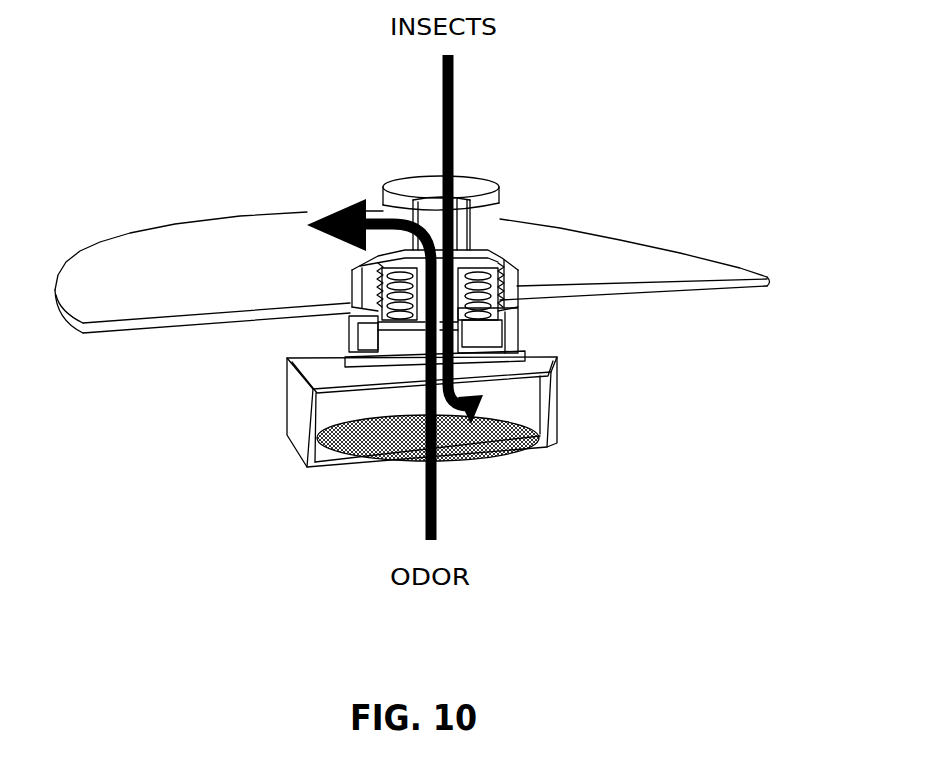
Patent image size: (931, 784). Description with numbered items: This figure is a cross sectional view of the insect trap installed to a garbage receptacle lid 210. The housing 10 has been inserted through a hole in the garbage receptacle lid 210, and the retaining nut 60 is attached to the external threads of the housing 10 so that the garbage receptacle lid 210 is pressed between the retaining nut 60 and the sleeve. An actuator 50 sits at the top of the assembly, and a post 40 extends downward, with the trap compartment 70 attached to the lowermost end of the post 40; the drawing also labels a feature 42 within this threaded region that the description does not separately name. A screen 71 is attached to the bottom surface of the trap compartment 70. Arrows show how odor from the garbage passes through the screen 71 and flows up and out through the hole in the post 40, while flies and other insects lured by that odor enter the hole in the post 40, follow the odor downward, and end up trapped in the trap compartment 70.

The garbage receptacle lid 210 is at (132, 282).
The actuator 50 is at (453, 163).
The housing 10 is at (478, 251).
The threaded nut / spring housing 42 is at (486, 251).
The retaining nut 60 is at (507, 277).
The post 40 is at (403, 355).
The trap compartment 70 is at (287, 442).
The screen 71 is at (393, 458).